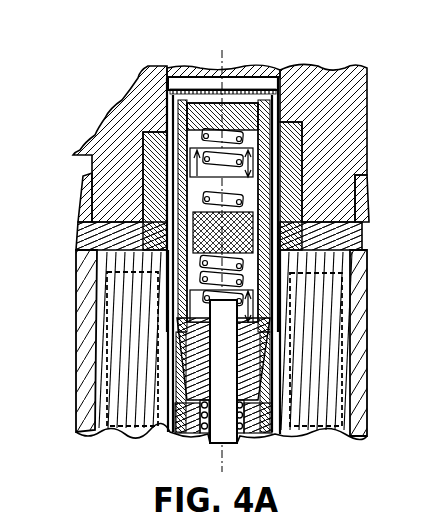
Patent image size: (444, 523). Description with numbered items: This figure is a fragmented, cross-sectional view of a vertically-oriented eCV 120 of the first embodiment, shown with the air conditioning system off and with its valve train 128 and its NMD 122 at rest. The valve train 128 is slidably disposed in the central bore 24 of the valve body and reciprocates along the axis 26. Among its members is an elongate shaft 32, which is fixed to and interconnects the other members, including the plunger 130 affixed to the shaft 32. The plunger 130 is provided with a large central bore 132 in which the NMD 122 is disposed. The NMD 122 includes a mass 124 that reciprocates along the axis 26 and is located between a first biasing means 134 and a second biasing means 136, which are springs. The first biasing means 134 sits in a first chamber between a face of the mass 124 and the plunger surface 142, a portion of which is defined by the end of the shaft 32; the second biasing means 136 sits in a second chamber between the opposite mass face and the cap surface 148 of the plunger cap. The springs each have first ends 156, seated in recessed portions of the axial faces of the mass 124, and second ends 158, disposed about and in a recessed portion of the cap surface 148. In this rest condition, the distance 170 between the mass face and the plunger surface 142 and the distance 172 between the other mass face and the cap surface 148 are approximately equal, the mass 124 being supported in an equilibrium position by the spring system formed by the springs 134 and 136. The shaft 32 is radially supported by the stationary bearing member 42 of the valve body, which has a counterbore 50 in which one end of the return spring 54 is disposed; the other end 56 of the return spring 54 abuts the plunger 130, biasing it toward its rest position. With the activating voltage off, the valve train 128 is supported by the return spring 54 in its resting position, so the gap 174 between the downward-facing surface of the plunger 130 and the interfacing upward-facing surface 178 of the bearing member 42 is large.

The eCV 120 is at (142, 40).
The central bore 24 is at (175, 82).
The axis 26 is at (252, 72).
The spring second ends 158 is at (190, 115).
The NMD 122 is at (285, 112).
The distance 172 is at (300, 148).
The cap surface 148 is at (143, 175).
The second biasing means 136 is at (140, 196).
The central bore 132 is at (145, 240).
The spring first ends 156 is at (365, 174).
The mass 124 is at (368, 210).
The first biasing means 134 is at (365, 251).
The plunger surface 142 is at (182, 303).
The shaft 32 is at (182, 352).
The valve train 128 is at (175, 378).
The upward-facing surface 178 is at (175, 410).
The distance 170 is at (305, 303).
The return spring other end 56 is at (272, 367).
The plunger 130 is at (272, 412).
The gap 174 is at (368, 432).
The return spring 54 is at (205, 434).
The counterbore 50 is at (237, 444).
The bearing member 42 is at (286, 436).